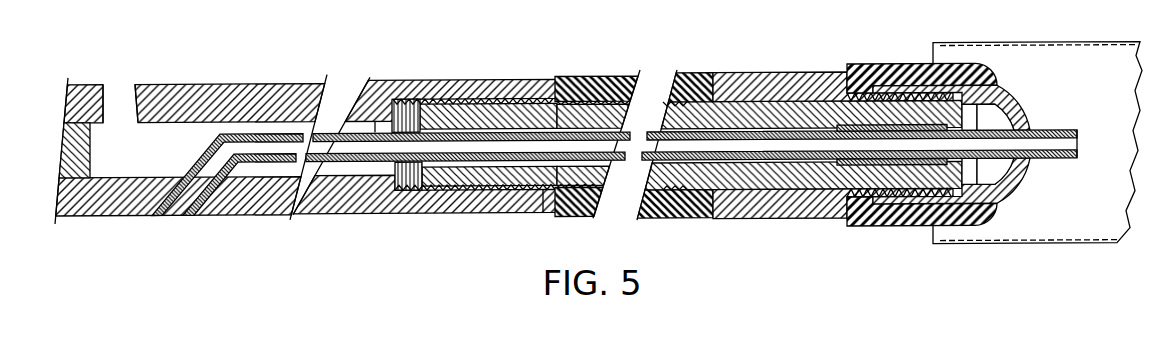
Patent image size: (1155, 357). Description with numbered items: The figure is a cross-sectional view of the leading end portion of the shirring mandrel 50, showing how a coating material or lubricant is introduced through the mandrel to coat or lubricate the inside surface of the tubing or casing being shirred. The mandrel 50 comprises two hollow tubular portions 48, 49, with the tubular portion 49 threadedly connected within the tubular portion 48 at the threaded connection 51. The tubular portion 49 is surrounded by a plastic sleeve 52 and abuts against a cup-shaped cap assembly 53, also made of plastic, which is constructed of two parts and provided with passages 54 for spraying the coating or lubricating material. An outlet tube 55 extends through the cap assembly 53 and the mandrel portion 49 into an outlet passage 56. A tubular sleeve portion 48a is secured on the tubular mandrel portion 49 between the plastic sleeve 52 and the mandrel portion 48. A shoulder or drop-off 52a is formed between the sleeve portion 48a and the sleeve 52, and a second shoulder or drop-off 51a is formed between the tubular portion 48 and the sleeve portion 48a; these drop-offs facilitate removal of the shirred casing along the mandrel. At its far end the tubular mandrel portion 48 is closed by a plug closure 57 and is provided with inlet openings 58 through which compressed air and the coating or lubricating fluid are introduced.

The hollow tubular portion 48 is at (221, 84).
The tubular sleeve portion 48a is at (617, 75).
The hollow tubular portion 49 is at (545, 192).
The mandrel 50 is at (657, 226).
The threaded connection 51 is at (467, 99).
The second shoulder or drop-off 51a is at (557, 77).
The sleeve 52 is at (793, 75).
The shoulder or drop-off 52a is at (707, 75).
The cup-shaped cap assembly 53 is at (892, 66).
The passages 54 is at (1020, 102).
The outlet tube 55 is at (1058, 163).
The outlet passage 56 is at (167, 215).
The plug closure 57 is at (92, 157).
The inlet openings 58 is at (135, 90).